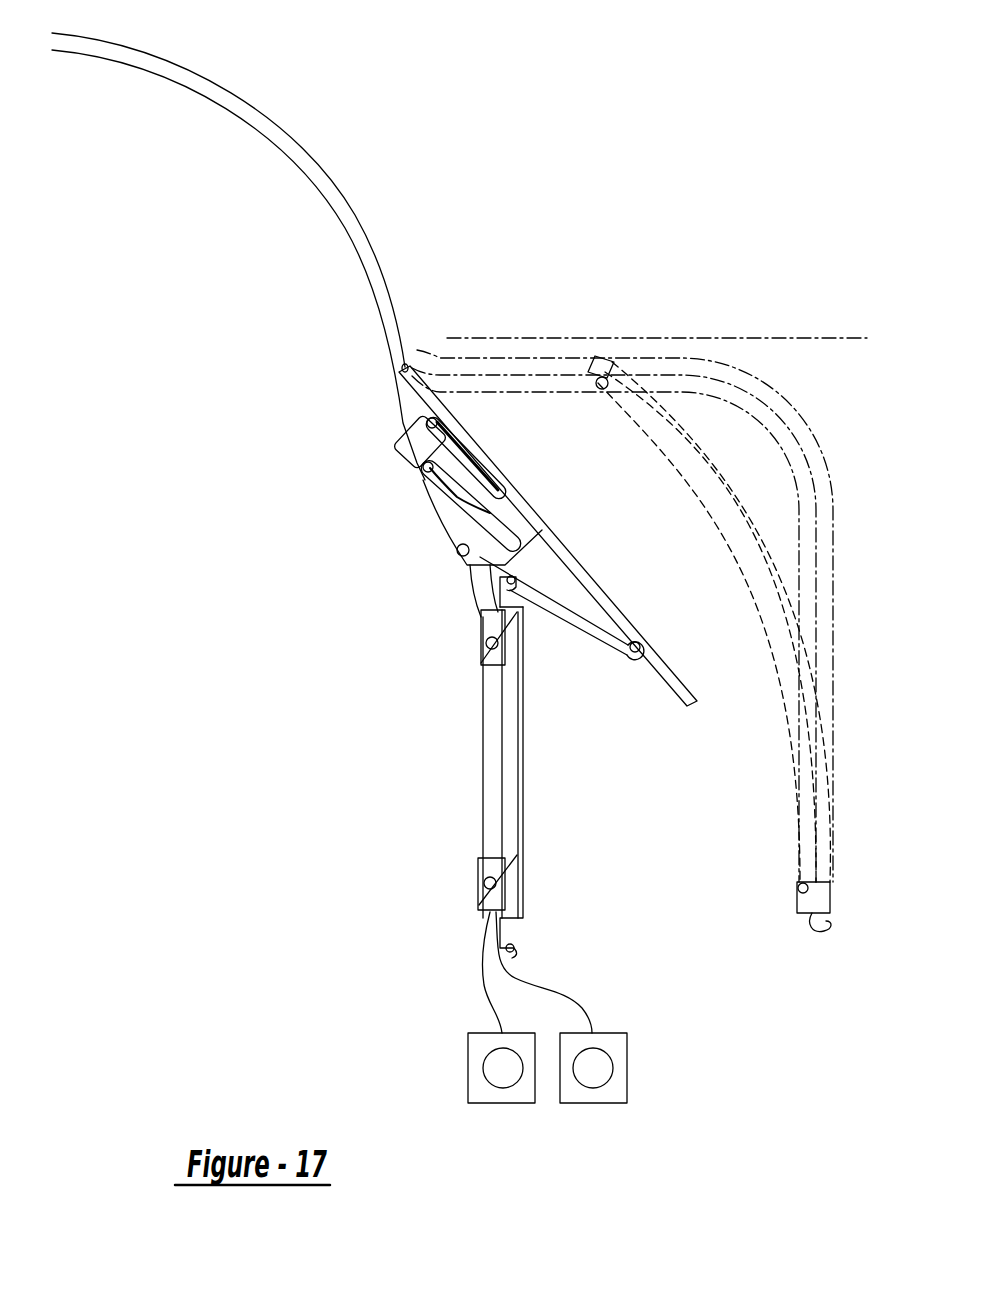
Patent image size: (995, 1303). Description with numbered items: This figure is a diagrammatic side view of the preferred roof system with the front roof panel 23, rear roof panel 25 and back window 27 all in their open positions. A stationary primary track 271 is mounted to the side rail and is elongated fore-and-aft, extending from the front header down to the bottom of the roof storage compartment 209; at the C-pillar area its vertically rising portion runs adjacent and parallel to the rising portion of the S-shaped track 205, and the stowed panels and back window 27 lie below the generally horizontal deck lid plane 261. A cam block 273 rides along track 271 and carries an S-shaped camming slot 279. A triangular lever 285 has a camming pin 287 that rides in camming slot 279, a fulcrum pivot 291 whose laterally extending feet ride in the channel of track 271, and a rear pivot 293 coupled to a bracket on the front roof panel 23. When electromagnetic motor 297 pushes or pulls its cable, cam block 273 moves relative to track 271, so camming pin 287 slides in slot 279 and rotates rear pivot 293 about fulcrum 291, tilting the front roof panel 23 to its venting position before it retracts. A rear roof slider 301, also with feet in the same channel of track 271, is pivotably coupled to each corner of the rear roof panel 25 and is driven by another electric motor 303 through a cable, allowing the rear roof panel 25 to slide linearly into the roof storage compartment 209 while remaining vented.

The primary track 271 is at (228, 90).
The S-shaped track 205 is at (666, 367).
The deck lid plane 261 is at (797, 338).
The cam block 273 is at (415, 435).
The camming pin 287 is at (426, 467).
The camming slot 279 is at (503, 499).
The front roof panel 23 is at (575, 556).
The back window 27 is at (743, 512).
The fulcrum pivot 291 is at (463, 556).
The rear pivot 293 is at (637, 642).
The lever 285 is at (540, 574).
The rear roof slider 301 is at (480, 664).
The rear roof panel 25 is at (518, 783).
The roof storage compartment 209 is at (703, 853).
The electric motor 303 is at (468, 1070).
The electromagnetic motor 297 is at (627, 1085).